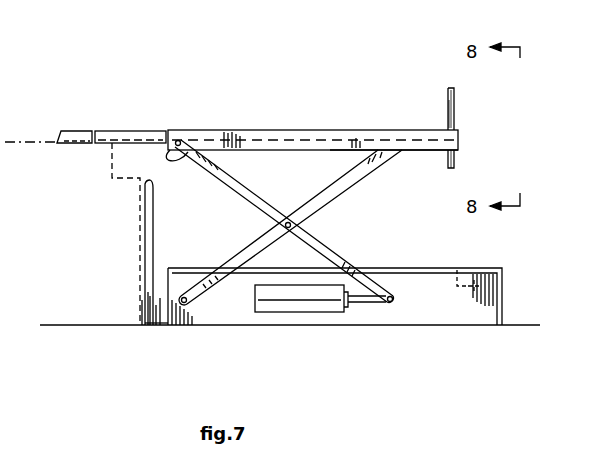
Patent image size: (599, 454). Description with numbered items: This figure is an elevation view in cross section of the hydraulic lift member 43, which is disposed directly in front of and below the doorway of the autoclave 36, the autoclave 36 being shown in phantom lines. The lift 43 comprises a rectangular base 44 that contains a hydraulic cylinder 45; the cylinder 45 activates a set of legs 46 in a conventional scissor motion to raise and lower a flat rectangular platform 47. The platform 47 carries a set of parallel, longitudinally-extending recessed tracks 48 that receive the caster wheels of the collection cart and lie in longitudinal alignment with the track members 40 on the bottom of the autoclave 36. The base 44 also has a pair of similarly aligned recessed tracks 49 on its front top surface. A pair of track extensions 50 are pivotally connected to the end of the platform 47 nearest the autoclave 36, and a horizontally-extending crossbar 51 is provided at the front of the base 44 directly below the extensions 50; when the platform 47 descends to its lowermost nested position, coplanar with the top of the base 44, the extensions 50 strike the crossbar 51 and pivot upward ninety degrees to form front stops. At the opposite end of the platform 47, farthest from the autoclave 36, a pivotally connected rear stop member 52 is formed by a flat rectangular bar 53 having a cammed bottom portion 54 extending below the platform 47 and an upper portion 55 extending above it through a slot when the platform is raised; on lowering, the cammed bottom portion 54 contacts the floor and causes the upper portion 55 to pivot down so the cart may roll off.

The autoclave 36 is at (112, 178).
The track members 40 is at (75, 131).
The track extensions 50 is at (139, 131).
The recessed tracks 48 is at (288, 135).
The platform 47 is at (408, 151).
The rear stop member 52 is at (455, 112).
The flat rectangular bar 53 is at (448, 100).
The upper portion 55 is at (448, 120).
The cammed bottom portion 54 is at (454, 162).
The legs 46 is at (318, 210).
The crossbar 51 is at (152, 196).
The base 44 is at (427, 314).
The hydraulic lift member 43 is at (476, 268).
The recessed tracks 49 is at (470, 298).
The hydraulic cylinder 45 is at (293, 302).